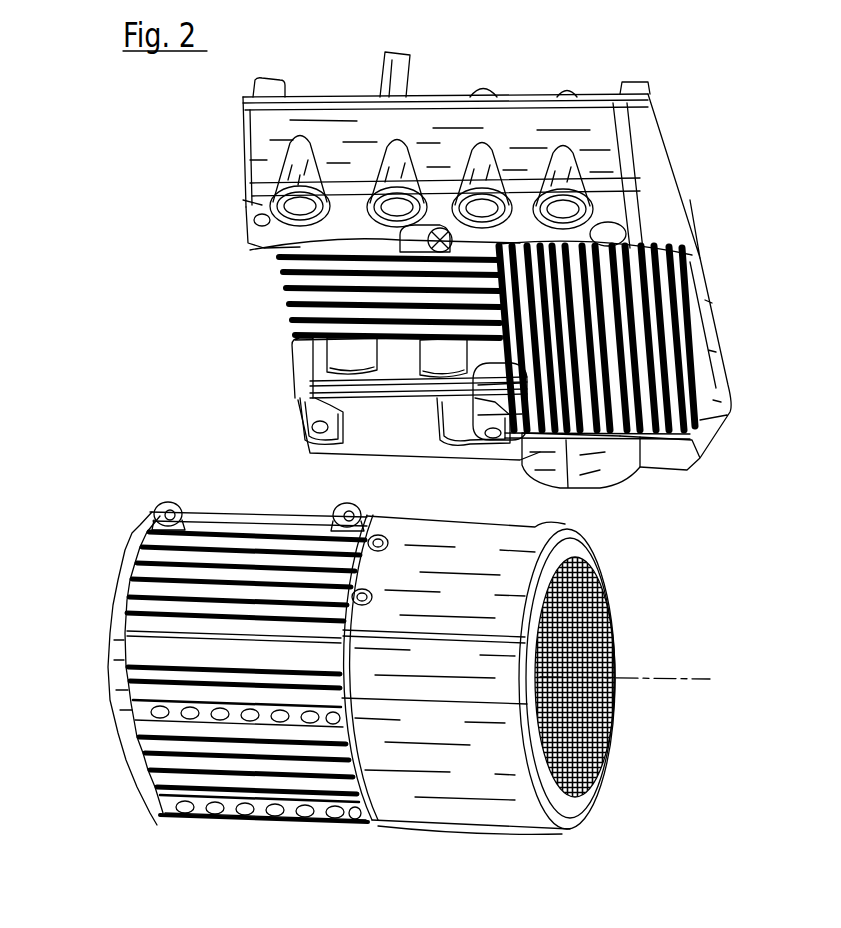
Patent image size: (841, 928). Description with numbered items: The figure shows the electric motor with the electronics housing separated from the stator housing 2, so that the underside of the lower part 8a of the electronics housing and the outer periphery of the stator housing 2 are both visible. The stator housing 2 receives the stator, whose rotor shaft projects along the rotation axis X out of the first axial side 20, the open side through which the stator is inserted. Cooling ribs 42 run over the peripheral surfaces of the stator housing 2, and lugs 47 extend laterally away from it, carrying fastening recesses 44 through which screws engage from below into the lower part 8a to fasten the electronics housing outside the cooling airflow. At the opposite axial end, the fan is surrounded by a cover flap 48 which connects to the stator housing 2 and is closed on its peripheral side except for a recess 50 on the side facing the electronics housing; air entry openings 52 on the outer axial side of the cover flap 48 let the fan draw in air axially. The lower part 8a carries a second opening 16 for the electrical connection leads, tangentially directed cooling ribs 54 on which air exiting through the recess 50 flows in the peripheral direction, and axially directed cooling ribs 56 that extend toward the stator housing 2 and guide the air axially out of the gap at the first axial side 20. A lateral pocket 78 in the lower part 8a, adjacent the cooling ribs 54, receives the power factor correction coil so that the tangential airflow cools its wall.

The stator housing 2 is at (297, 875).
The lower part 8a is at (610, 137).
The second opening 16 is at (283, 250).
The first axial side 20 is at (63, 712).
The cooling ribs 42 is at (83, 537).
The fastening recesses 44 is at (335, 525).
The lugs 47 is at (340, 507).
The cover flap 48 is at (497, 812).
The recess 50 is at (530, 527).
The air entry openings 52 is at (582, 790).
The cooling ribs 54 is at (657, 317).
The cooling ribs 56 is at (283, 325).
The lateral pocket 78 is at (587, 478).
The rotation axis X is at (665, 682).